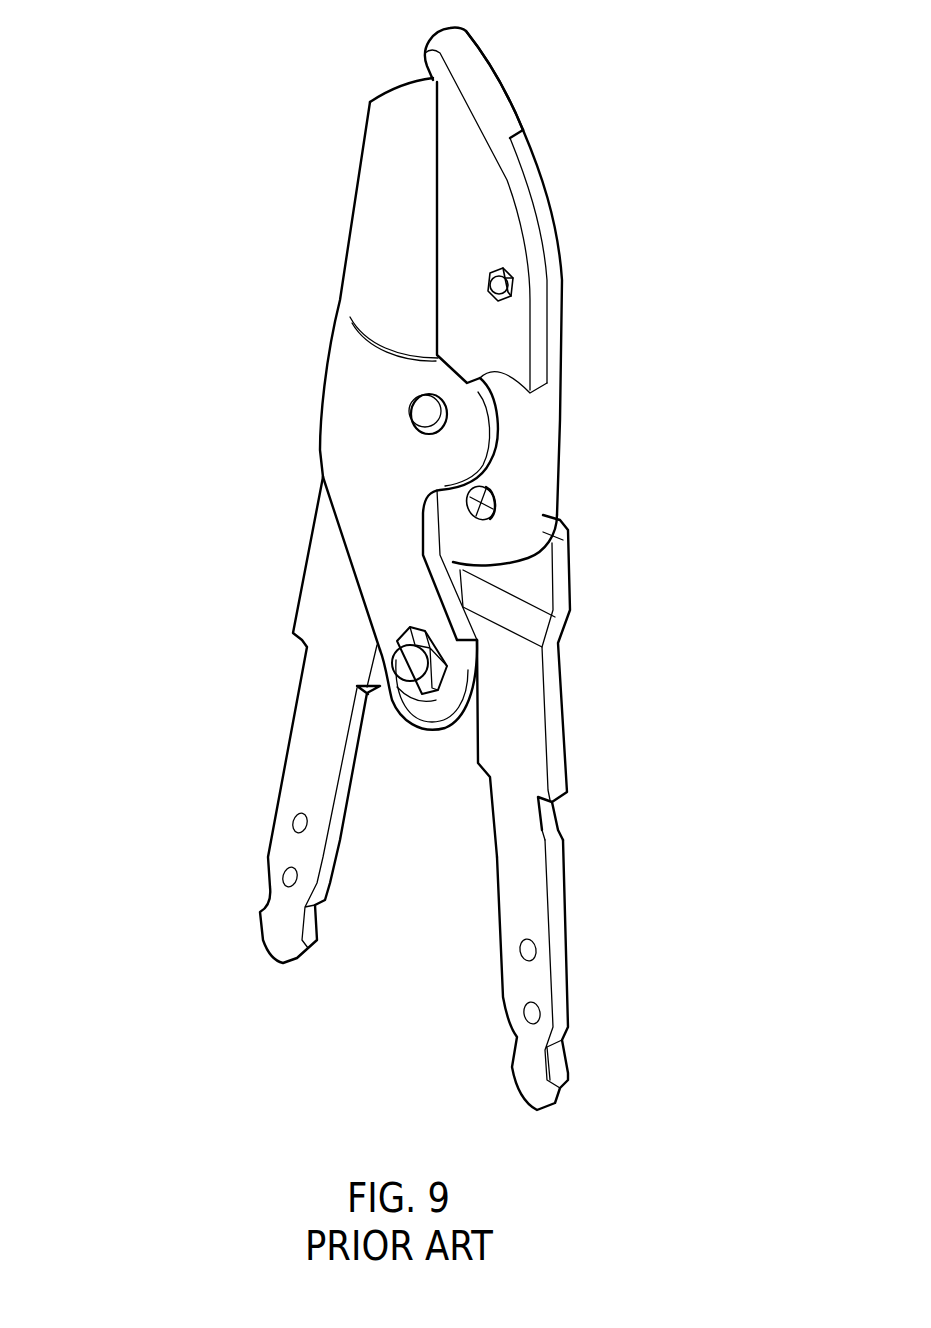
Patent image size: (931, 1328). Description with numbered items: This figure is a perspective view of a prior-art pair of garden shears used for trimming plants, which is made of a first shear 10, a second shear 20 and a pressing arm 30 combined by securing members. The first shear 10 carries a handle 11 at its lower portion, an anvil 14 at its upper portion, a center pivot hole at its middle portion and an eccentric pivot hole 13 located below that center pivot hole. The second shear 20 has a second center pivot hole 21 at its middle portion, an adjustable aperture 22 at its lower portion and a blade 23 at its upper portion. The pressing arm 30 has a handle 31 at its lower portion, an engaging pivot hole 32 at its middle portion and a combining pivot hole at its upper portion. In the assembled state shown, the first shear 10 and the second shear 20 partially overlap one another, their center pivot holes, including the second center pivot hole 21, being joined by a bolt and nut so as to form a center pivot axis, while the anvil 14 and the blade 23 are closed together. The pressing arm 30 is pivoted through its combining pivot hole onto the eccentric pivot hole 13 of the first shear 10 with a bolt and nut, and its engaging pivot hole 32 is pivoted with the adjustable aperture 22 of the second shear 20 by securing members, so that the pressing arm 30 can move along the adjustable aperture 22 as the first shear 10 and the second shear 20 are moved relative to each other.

The first shear 10 is at (562, 363).
The handle 11 is at (302, 777).
The eccentric pivot hole 13 is at (493, 500).
The anvil 14 is at (440, 187).
The second shear 20 is at (334, 291).
The second center pivot hole 21 is at (407, 397).
The adjustable aperture 22 is at (415, 630).
The blade 23 is at (430, 233).
The pressing arm 30 is at (567, 735).
The handle 31 is at (545, 983).
The engaging pivot hole 32 is at (408, 665).